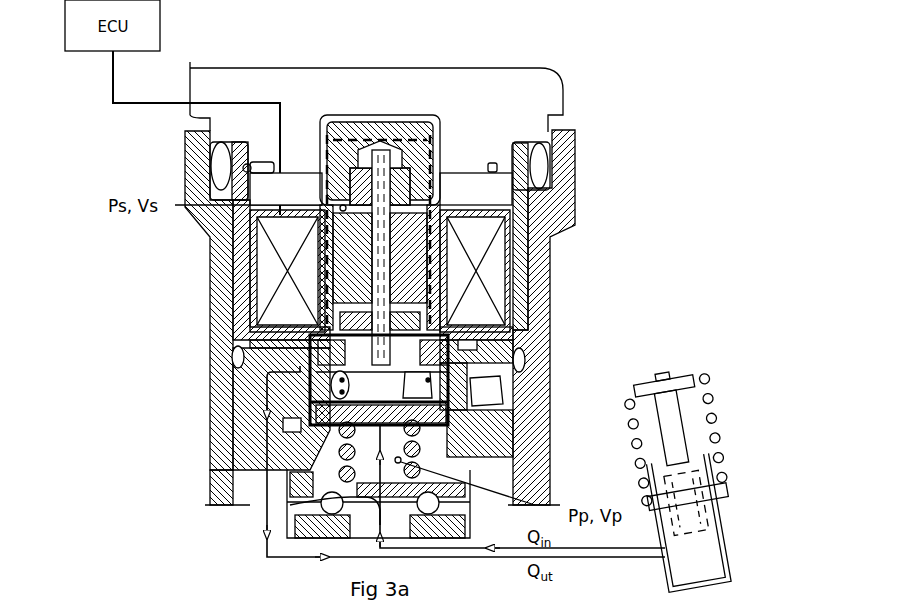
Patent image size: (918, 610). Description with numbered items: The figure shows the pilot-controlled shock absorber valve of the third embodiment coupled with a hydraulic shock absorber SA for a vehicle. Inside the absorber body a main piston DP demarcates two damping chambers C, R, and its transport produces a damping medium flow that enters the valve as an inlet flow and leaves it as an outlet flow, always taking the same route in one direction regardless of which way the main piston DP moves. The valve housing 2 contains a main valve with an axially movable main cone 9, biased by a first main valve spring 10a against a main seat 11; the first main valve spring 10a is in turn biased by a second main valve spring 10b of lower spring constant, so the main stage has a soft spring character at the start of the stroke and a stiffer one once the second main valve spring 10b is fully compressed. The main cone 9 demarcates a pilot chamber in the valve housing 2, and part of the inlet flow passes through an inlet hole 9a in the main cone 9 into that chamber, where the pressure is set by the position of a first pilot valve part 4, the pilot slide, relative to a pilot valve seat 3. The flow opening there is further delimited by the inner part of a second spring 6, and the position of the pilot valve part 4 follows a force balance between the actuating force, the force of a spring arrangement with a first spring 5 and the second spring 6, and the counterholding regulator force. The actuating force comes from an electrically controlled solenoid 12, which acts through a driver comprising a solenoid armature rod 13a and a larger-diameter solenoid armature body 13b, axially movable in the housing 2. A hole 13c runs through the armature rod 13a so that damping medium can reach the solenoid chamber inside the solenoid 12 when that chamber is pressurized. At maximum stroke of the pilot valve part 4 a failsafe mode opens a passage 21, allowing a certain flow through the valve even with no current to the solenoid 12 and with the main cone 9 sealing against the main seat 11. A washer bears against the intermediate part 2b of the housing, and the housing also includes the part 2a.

The valve housing 2 is at (473, 440).
The housing cap 2a is at (384, 172).
The intermediate part of the valve housing 2b is at (455, 322).
The pilot valve seat 3 is at (273, 402).
The first pilot valve part 4 is at (245, 335).
The first spring 5 is at (258, 348).
The second spring 6 is at (272, 378).
The main cone 9 is at (300, 482).
The inlet hole 9a is at (330, 497).
The first main valve spring 10a is at (290, 461).
The second main valve spring 10b is at (290, 426).
The main seat 11 is at (300, 522).
The solenoid 12 is at (480, 263).
The solenoid armature rod 13a is at (396, 198).
The solenoid armature body 13b is at (407, 242).
The hole 13c is at (390, 186).
The passage 21 is at (465, 376).
The hydraulic shock absorber SA is at (716, 390).
The damping chamber R is at (712, 462).
The main piston DP is at (707, 530).
The damping chamber C is at (710, 575).